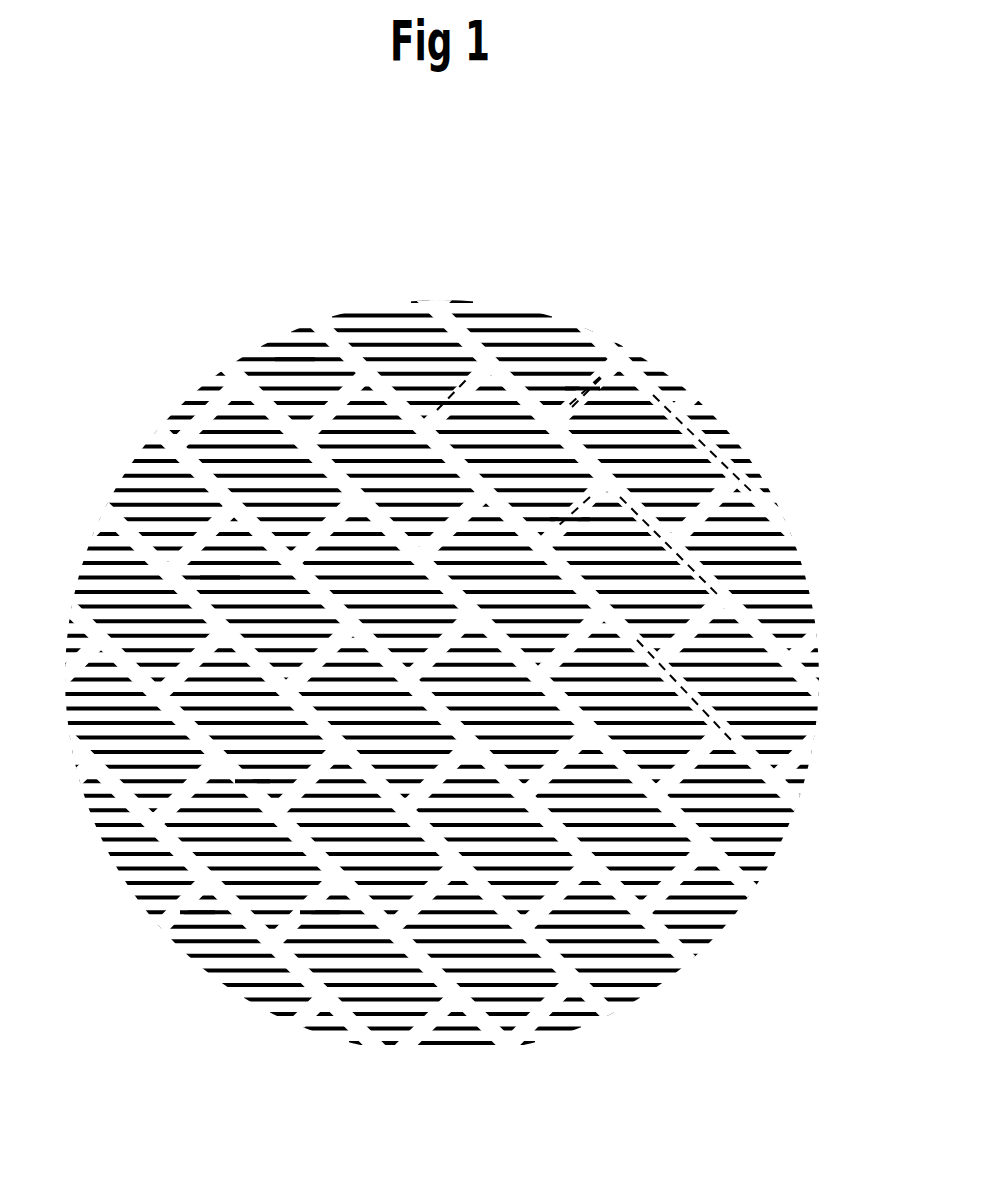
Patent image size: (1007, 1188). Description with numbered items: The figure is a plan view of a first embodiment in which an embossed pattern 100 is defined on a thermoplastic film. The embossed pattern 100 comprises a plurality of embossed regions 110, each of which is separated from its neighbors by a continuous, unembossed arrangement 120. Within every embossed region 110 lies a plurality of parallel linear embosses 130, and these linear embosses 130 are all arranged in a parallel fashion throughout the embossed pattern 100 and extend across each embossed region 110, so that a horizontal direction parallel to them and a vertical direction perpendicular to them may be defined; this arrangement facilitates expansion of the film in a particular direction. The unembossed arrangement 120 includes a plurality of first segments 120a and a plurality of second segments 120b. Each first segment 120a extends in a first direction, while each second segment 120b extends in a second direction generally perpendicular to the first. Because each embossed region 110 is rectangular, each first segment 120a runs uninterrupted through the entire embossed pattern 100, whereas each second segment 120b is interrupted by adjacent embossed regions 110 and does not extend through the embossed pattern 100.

The embossed pattern 100 is at (786, 190).
The embossed region 110 is at (294, 357).
The unembossed arrangement 120 is at (240, 778).
The first segment 120a is at (690, 693).
The second segment 120b is at (567, 513).
The parallel linear embosses 130 is at (248, 590).